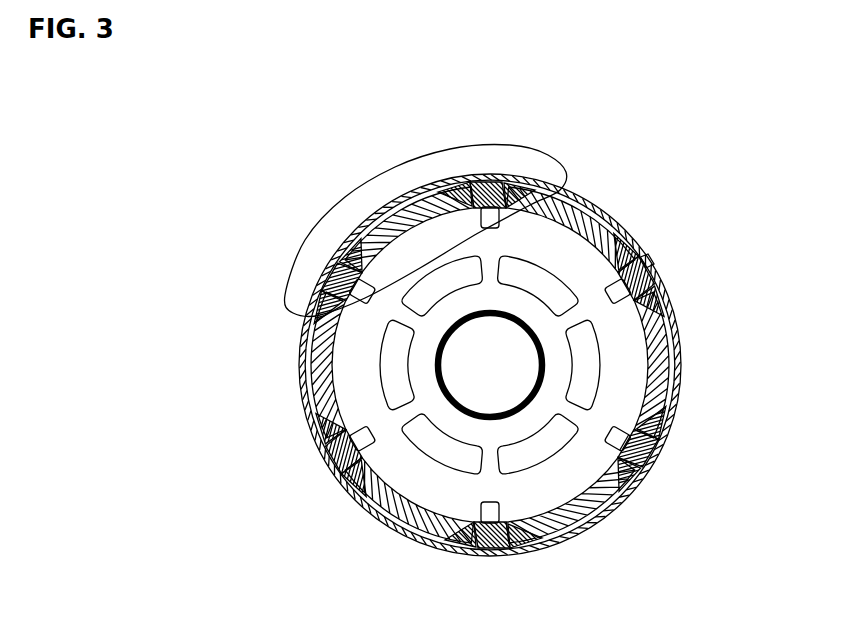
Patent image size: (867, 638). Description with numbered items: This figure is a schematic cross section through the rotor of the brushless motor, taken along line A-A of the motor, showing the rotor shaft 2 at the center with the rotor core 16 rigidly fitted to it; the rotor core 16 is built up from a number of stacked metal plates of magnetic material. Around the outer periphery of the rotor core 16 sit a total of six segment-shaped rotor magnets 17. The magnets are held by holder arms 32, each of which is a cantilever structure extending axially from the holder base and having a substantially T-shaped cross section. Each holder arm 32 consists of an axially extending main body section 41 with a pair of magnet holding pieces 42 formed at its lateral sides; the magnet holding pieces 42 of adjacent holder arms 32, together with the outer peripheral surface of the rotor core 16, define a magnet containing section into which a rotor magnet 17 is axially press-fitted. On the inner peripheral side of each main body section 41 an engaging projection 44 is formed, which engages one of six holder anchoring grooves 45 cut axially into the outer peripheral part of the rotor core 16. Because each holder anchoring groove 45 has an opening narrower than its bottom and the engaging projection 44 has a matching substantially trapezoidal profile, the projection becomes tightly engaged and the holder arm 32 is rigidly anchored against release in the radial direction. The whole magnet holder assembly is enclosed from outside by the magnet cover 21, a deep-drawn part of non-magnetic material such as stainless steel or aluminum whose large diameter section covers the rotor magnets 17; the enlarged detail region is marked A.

The rotor shaft 2 is at (455, 369).
The rotor core 16 is at (417, 476).
The rotor magnet 17 is at (677, 338).
The magnet cover 21 is at (613, 220).
The holder arm 32 is at (650, 263).
The main body section 41 is at (653, 452).
The magnet holding piece 42 is at (643, 415).
The engaging projection 44 is at (622, 430).
The holder anchoring groove 45 is at (618, 446).
The detail region A is at (386, 182).